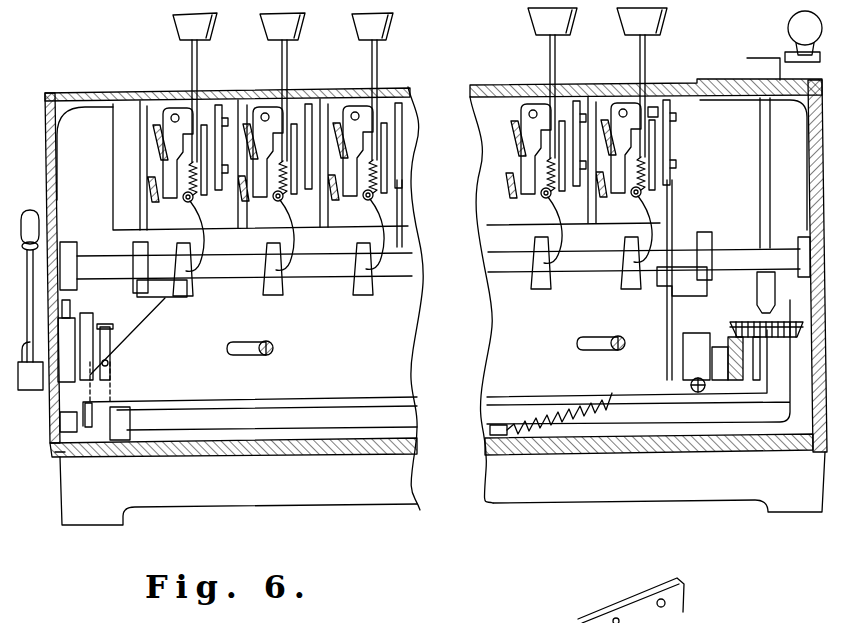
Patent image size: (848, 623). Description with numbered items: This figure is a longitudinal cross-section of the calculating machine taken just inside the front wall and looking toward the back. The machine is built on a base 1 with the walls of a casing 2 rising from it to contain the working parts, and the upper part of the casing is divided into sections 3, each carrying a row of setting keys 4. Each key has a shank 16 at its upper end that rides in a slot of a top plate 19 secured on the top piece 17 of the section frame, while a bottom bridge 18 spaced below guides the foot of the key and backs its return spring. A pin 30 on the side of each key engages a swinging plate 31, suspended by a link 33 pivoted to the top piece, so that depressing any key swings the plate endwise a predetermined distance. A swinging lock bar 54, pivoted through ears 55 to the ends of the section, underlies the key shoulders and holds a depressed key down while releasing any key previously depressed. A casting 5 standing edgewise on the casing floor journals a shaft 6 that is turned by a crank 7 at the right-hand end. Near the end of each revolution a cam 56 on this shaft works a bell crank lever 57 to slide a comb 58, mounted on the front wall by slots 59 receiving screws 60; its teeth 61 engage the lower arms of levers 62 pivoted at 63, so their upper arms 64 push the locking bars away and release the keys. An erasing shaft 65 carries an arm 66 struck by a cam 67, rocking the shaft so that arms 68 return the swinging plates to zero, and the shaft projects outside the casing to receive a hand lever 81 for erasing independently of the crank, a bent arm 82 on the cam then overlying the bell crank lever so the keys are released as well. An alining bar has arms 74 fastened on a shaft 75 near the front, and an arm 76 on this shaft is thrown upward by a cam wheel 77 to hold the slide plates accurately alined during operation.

The base 1 is at (493, 503).
The walls of the casing 2 is at (46, 144).
The casing section 3 is at (113, 200).
The setting key 4 is at (173, 22).
The casting 5 is at (487, 88).
The shaft 6 is at (713, 380).
The crank 7 is at (787, 55).
The shank 16 is at (377, 65).
The top piece 17 is at (175, 94).
The bottom bridge 18 is at (173, 224).
The top plate 19 is at (100, 93).
The pin 30 is at (653, 107).
The swinging plate 31 is at (388, 162).
The link 33 is at (397, 140).
The locking bar 54 is at (160, 153).
The ears 55 is at (163, 122).
The cam 56 is at (110, 340).
The bell crank lever 57 is at (110, 362).
The comb 58 is at (487, 354).
The slot 59 is at (243, 354).
The screw 60 is at (267, 355).
The teeth 61 is at (273, 287).
The lever 62 is at (380, 238).
The pivot 63 is at (370, 195).
The upper arm 64 is at (367, 170).
The shaft 65 is at (12, 353).
The arm 66 is at (93, 325).
The cam 67 is at (60, 460).
The arm 68 is at (402, 222).
The arm 74 is at (138, 298).
The shaft 75 is at (492, 263).
The arm 76 is at (63, 308).
The cam wheel 77 is at (63, 410).
The hand lever 81 is at (26, 211).
The bent arm 82 is at (90, 375).